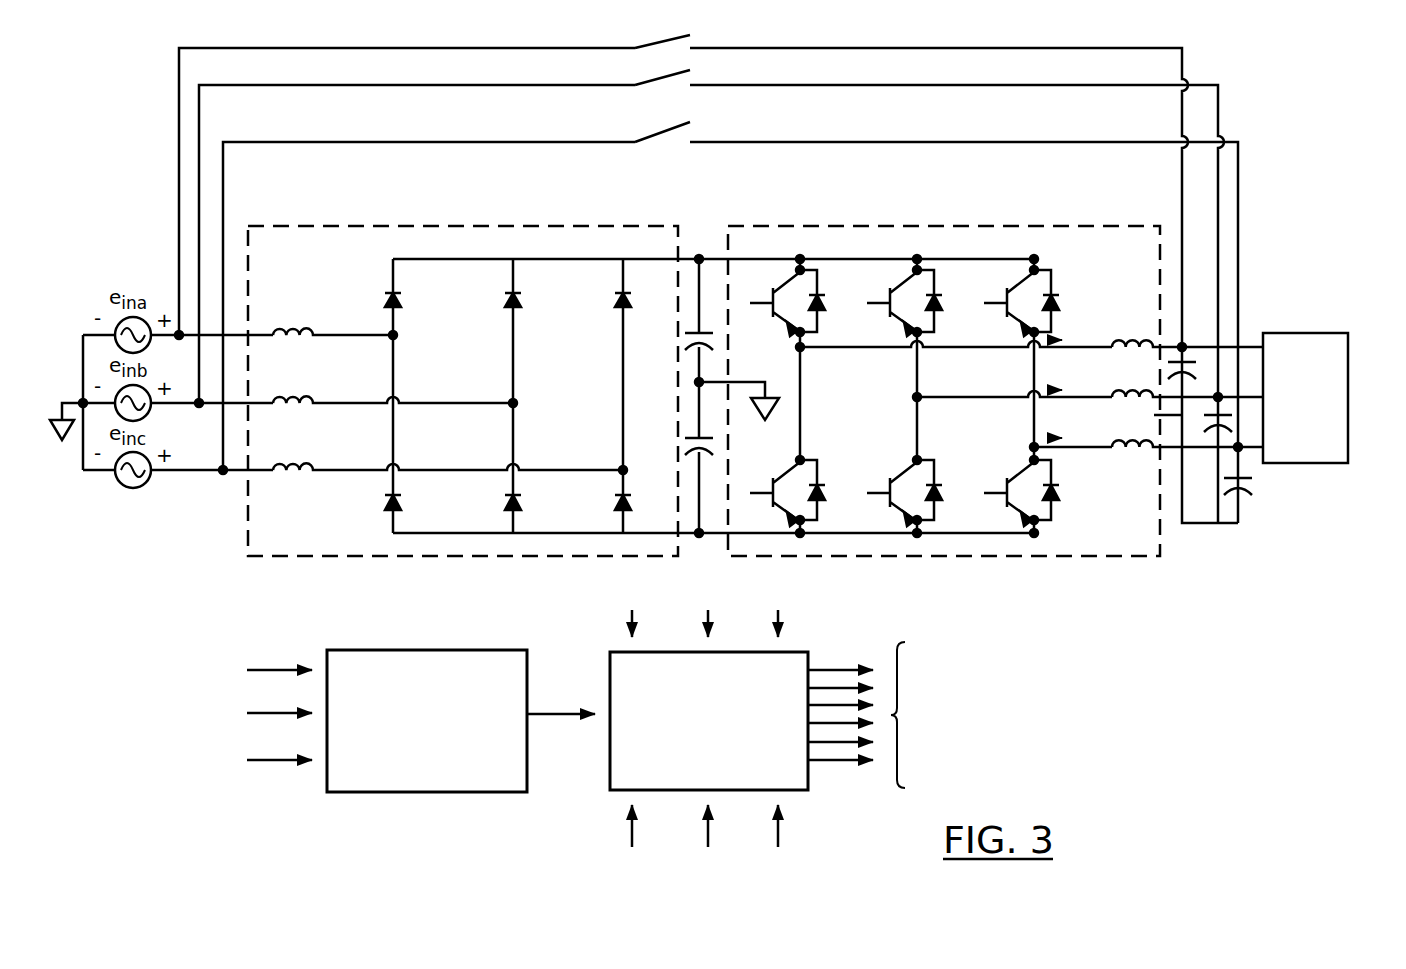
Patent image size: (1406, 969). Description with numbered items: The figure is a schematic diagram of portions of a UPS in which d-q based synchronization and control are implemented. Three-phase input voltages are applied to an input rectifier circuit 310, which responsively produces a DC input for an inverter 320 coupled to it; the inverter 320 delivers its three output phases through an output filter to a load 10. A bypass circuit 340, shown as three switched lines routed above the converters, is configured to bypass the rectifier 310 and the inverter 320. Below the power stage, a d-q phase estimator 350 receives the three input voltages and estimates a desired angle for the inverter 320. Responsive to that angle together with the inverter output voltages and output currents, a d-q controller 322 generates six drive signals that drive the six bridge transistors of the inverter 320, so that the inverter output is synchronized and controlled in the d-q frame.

The load 10 is at (1349, 403).
The input rectifier circuit 310 is at (326, 558).
The inverter 320 is at (1100, 558).
The d-q controller 322 is at (795, 652).
The bypass circuit 340 is at (698, 151).
The d-q phase estimator 350 is at (487, 651).